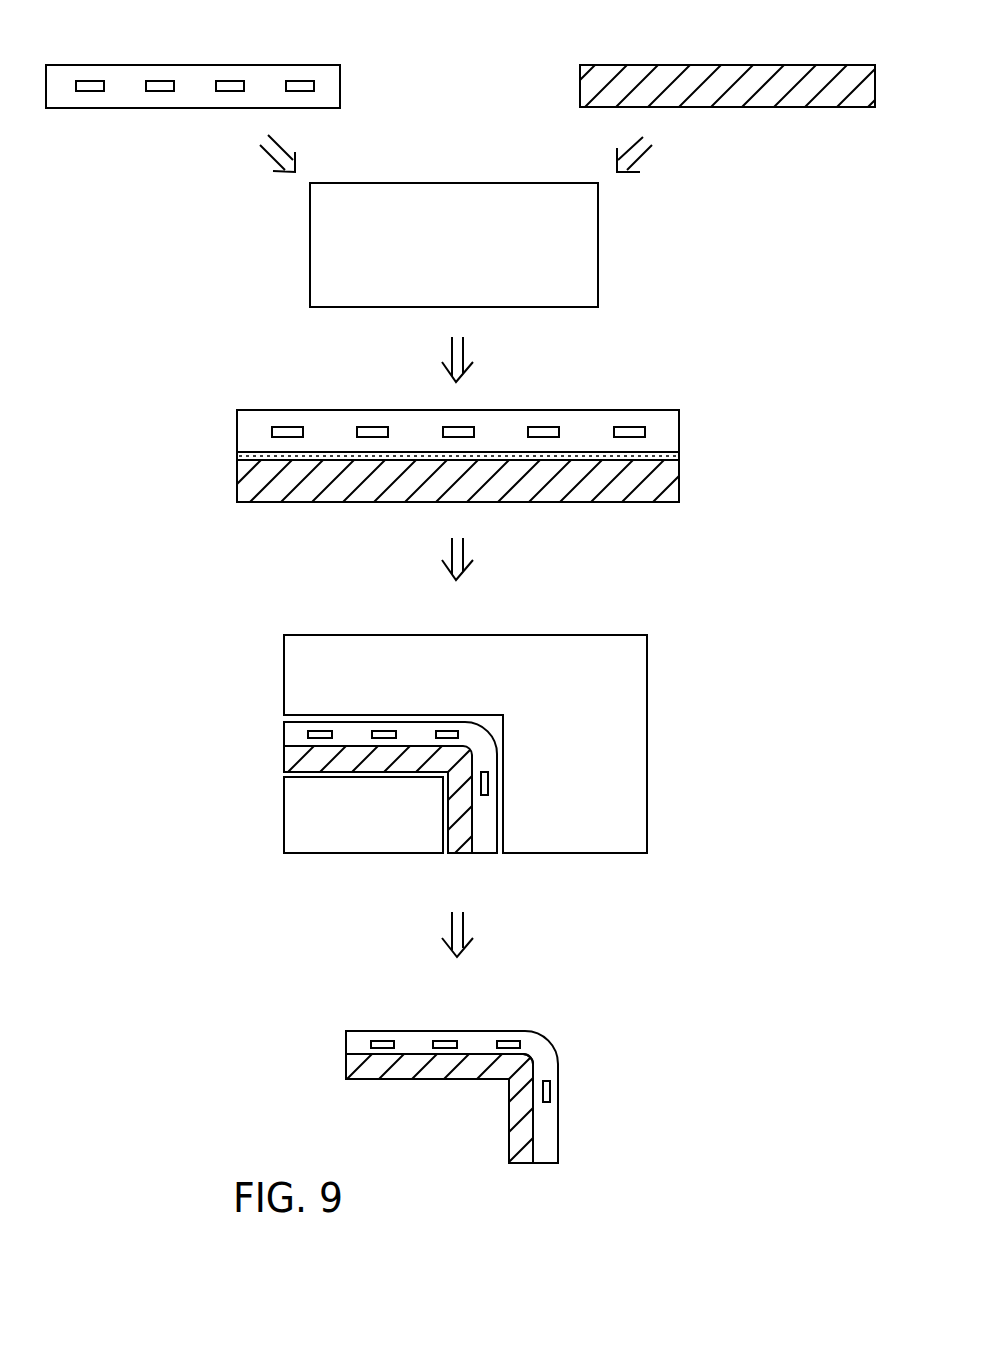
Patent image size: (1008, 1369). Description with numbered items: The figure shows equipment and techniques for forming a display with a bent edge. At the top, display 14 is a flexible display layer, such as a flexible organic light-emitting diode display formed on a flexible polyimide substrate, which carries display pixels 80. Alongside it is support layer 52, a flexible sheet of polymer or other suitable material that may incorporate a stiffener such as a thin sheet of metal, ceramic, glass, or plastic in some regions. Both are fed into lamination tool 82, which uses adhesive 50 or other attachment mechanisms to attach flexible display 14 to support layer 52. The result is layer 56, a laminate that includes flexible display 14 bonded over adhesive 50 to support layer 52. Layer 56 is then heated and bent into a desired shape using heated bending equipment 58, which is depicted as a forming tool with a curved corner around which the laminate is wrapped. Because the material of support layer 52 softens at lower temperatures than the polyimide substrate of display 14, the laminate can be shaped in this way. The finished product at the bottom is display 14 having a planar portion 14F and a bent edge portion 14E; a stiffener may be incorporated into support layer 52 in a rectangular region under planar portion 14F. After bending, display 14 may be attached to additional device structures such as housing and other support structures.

The display 14 is at (260, 65).
The display pixels 80 is at (157, 81).
The support layer 52 is at (762, 65).
The lamination tool 82 is at (598, 256).
The layer 56 is at (220, 410).
The adhesive 50 is at (679, 457).
The heated bending equipment 58 is at (630, 722).
The planar portion 14F is at (472, 1040).
The bent edge portion 14E is at (573, 1056).